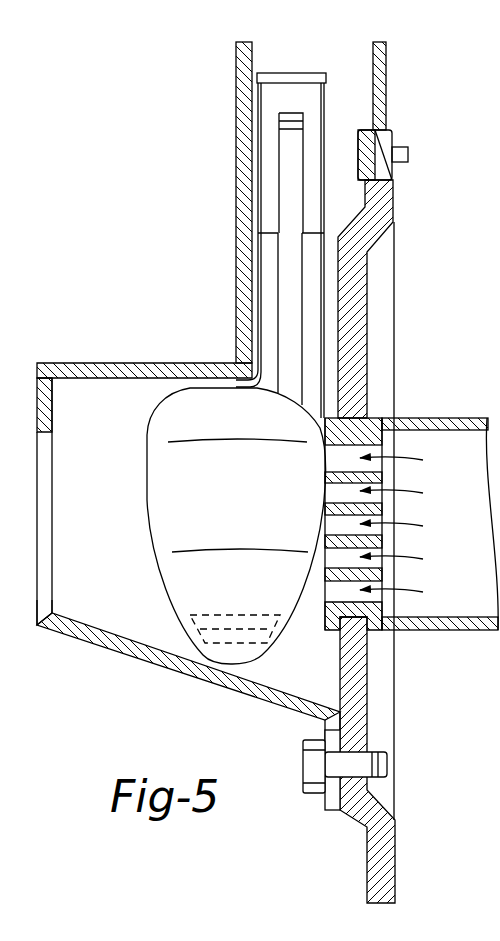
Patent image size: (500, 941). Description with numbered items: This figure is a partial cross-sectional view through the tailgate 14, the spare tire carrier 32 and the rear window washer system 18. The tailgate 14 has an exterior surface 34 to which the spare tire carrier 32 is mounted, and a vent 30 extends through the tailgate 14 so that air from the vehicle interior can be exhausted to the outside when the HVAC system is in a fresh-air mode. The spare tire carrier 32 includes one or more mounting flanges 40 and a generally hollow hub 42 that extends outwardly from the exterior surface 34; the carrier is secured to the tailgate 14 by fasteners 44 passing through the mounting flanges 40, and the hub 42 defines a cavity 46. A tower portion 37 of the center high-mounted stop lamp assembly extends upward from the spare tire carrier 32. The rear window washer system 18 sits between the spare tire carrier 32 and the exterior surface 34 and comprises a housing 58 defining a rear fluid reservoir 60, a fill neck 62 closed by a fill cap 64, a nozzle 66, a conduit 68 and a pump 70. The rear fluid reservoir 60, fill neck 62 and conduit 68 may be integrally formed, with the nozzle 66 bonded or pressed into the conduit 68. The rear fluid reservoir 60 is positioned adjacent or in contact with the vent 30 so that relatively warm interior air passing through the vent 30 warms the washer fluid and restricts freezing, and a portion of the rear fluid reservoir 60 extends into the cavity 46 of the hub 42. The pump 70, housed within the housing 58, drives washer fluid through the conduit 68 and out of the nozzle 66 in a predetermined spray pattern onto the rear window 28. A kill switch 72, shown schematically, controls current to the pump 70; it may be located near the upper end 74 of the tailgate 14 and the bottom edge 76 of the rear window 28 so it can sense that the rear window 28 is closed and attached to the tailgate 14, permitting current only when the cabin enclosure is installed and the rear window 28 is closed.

The tailgate 14 is at (398, 224).
The rear window washer system 18 is at (197, 493).
The rear window 28 is at (386, 78).
The vent 30 is at (430, 418).
The spare tire carrier 32 is at (38, 641).
The exterior surface 34 is at (338, 673).
The tower portion 37 is at (236, 160).
The mounting flange 40 is at (335, 810).
The hub 42 is at (75, 362).
The fastener 44 is at (305, 762).
The cavity 46 is at (82, 379).
The housing 58 is at (178, 400).
The rear fluid reservoir 60 is at (162, 513).
The fill neck 62 is at (262, 248).
The fill cap 64 is at (297, 73).
The nozzle 66 is at (283, 125).
The conduit 68 is at (292, 295).
The pump 70 is at (187, 623).
The kill switch 72 is at (409, 155).
The upper end 74 is at (380, 166).
The bottom edge 76 is at (393, 137).